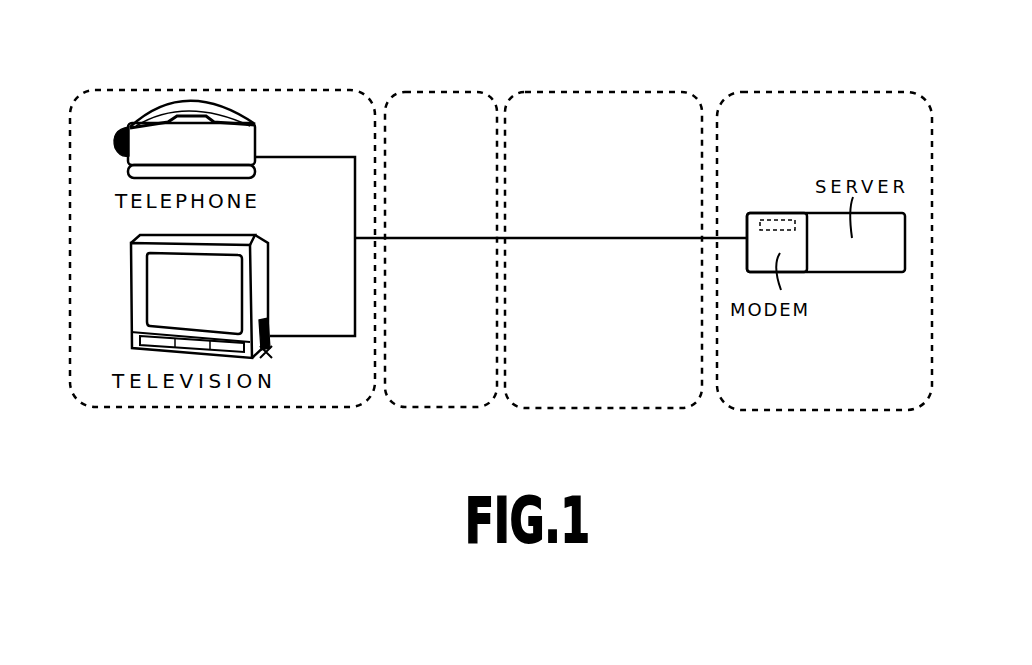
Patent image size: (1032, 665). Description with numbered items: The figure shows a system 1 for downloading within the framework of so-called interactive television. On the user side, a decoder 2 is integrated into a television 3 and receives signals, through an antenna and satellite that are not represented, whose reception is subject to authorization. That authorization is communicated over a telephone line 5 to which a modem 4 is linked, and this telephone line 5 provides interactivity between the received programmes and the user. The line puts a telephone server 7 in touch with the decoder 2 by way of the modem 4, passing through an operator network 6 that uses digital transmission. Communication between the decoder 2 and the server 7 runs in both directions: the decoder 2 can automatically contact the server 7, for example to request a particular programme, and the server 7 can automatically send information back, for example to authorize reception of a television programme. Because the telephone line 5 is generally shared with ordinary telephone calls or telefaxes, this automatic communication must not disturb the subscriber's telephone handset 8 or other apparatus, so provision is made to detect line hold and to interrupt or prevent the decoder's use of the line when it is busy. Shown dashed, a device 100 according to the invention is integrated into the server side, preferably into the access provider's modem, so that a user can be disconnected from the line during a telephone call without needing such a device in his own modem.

The system 1 is at (516, 40).
The decoder 2 is at (270, 322).
The television 3 is at (130, 289).
The modem 4 is at (283, 366).
The telephone line 5 is at (442, 238).
The operator network 6 is at (610, 408).
The telephone server 7 is at (845, 410).
The telephone handset 8 is at (182, 140).
The device according to the invention 100 is at (778, 213).